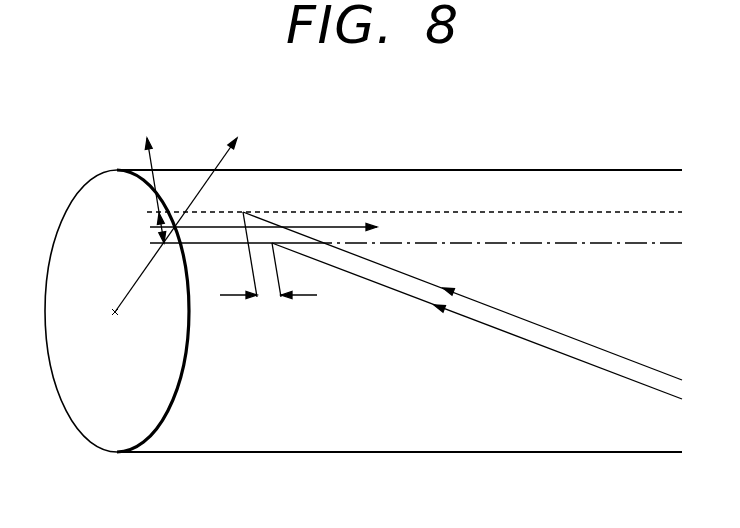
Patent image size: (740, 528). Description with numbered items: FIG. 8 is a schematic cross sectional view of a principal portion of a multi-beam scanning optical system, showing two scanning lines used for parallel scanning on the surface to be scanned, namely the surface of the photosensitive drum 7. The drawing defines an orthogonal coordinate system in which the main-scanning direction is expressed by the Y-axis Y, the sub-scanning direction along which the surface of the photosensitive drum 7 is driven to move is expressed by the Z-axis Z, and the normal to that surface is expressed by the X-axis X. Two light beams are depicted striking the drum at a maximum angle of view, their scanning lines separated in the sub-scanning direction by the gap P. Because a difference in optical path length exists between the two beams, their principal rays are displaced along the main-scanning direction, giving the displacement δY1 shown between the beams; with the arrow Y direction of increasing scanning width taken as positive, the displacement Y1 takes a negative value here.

The surface to be scanned (surface of the photosensitive drum) 7 is at (325, 415).
The X-axis X is at (183, 210).
The Y-axis Y is at (277, 228).
The Z-axis Z is at (149, 176).
The gap separating the scanning lines P is at (152, 228).
The displacement δ Y1 is at (268, 284).